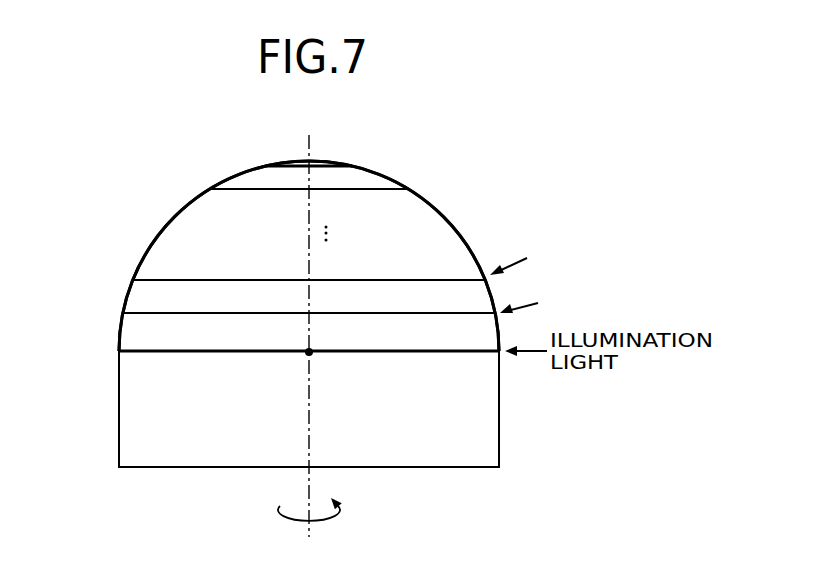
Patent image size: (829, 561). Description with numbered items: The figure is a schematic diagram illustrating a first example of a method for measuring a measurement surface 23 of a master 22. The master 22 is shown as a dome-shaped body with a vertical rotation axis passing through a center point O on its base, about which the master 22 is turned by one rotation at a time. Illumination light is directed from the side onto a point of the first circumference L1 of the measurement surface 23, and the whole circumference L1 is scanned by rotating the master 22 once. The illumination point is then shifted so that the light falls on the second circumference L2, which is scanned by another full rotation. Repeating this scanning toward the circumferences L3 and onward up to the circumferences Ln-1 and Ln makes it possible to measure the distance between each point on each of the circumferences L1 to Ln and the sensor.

The master 22 is at (443, 162).
The measurement surface 23 is at (448, 216).
The rotation center O is at (311, 356).
The circumference L1 is at (172, 352).
The circumference L2 is at (172, 314).
The circumference L3 is at (172, 281).
The circumference Ln-1 is at (282, 190).
The circumference Ln is at (282, 167).